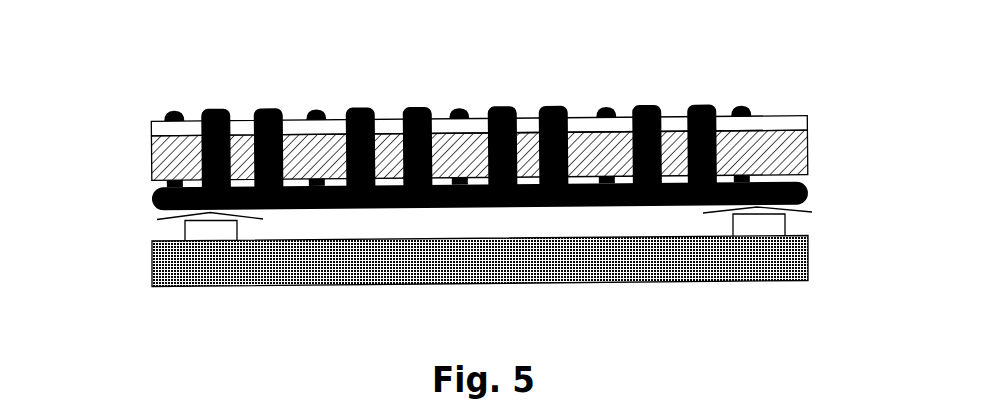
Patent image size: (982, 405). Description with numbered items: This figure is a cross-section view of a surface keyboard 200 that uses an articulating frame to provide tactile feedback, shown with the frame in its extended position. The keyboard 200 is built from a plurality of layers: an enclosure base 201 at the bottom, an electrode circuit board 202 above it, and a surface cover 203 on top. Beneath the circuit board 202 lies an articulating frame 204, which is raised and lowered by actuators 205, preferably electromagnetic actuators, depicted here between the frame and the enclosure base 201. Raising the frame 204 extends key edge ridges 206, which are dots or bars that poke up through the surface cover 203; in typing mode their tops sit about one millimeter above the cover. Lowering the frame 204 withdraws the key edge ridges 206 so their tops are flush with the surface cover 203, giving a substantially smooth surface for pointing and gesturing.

The surface keyboard 200 is at (440, 45).
The enclosure base 201 is at (740, 281).
The electrode circuit board 202 is at (808, 155).
The surface cover 203 is at (777, 116).
The articulating frame 204 is at (153, 190).
The electromagnetic actuators 205 is at (167, 222).
The key edge ridges 206 is at (647, 104).